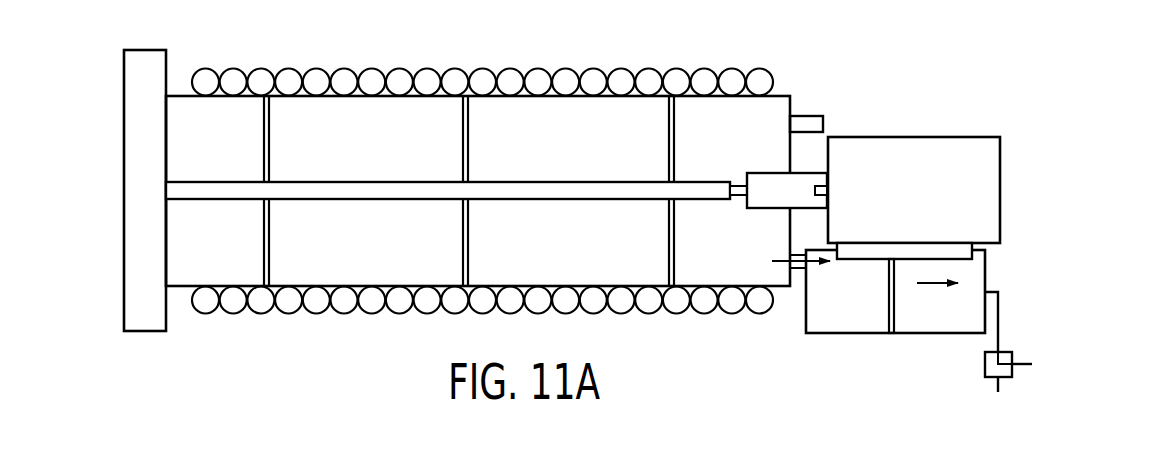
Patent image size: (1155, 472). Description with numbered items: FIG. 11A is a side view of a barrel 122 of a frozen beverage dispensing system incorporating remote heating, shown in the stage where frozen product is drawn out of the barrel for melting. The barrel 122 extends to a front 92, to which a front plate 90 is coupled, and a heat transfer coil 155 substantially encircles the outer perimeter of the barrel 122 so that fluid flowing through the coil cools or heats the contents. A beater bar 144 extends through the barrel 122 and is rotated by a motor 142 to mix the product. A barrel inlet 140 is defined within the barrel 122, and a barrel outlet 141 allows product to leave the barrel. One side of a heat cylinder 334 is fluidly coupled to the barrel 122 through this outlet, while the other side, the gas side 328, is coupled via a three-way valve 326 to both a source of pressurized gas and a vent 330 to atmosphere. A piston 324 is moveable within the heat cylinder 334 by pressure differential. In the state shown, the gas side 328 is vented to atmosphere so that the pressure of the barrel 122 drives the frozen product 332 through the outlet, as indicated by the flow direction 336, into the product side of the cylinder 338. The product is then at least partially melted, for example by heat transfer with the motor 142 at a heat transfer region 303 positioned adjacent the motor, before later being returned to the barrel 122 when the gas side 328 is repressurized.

The front plate 90 is at (139, 112).
The barrel 122 is at (174, 84).
The heat transfer coil 155 is at (343, 76).
The front 92 is at (174, 303).
The beater bar 144 is at (692, 171).
The barrel inlet 140 is at (808, 117).
The motor 142 is at (931, 127).
The heat transfer region 303 is at (916, 257).
The frozen product 332 is at (778, 256).
The flow direction 336 is at (972, 281).
The piston 324 is at (902, 326).
The barrel outlet 141 is at (802, 268).
The product side of the cylinder 338 is at (838, 317).
The heat cylinder 334 is at (867, 341).
The three-way valve 326 is at (977, 367).
The vent 330 is at (1068, 346).
The gas side 328 is at (995, 427).